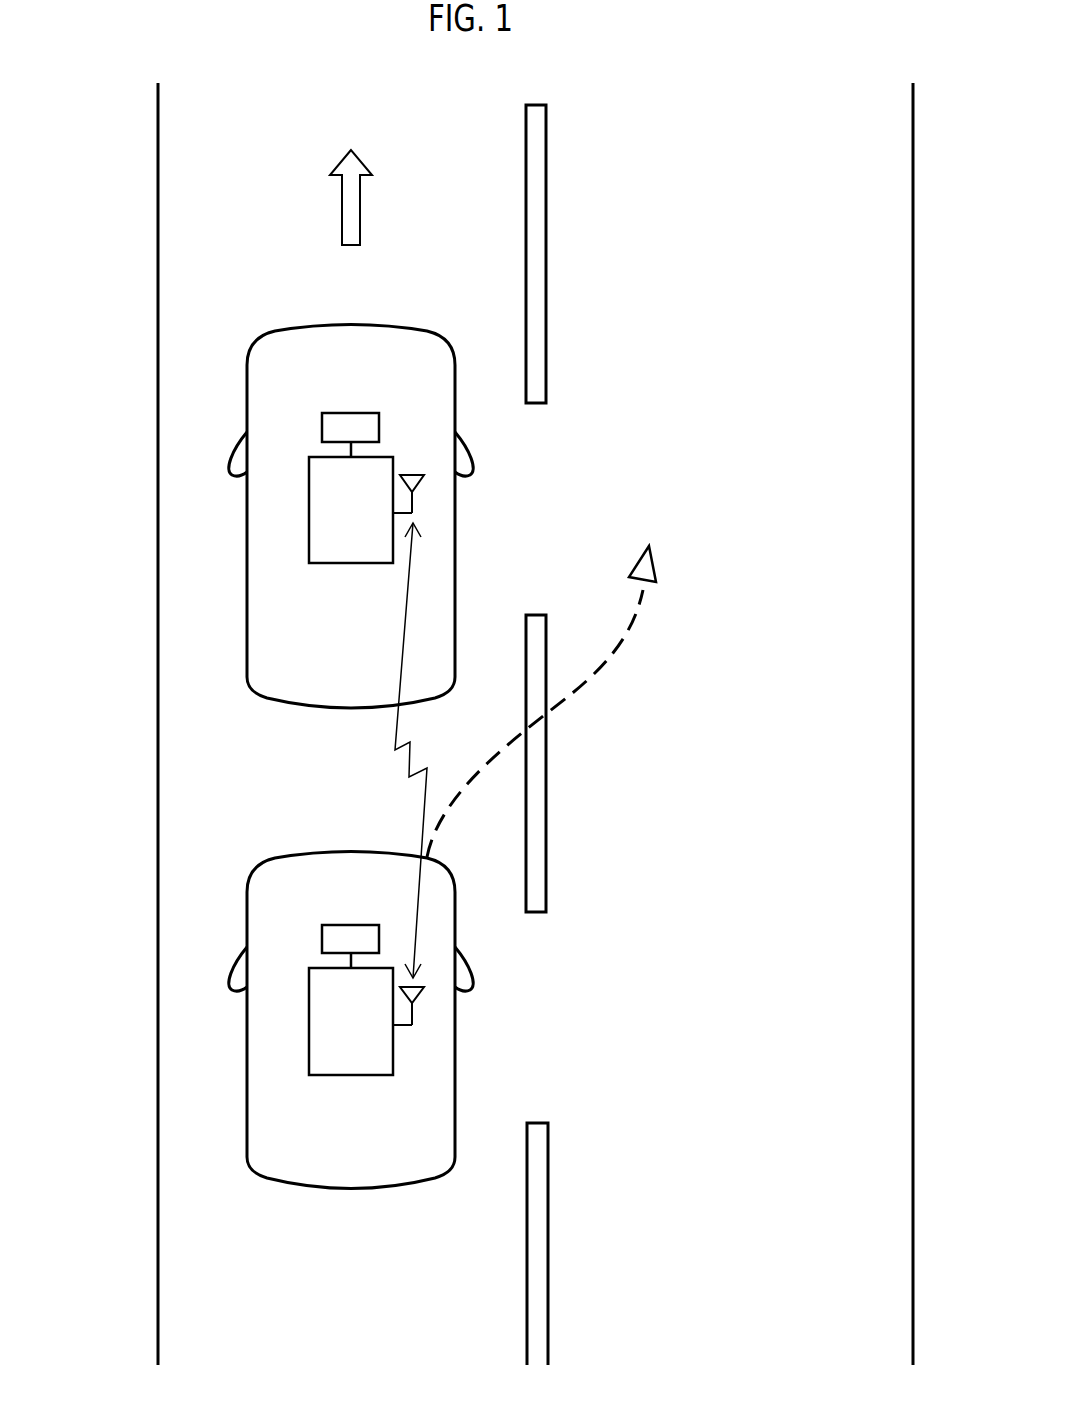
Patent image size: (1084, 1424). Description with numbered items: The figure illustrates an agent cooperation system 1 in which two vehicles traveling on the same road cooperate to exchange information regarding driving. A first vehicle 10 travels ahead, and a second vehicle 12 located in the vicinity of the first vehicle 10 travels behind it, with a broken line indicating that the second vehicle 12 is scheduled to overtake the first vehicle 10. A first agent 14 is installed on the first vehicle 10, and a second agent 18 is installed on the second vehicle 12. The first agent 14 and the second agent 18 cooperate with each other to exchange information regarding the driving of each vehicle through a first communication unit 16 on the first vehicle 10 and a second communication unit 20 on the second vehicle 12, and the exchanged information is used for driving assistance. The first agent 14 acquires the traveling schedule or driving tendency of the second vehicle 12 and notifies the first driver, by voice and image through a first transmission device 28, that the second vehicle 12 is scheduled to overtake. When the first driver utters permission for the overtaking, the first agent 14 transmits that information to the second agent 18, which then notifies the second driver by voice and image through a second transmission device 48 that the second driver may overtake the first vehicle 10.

The agent cooperation system 1 is at (320, 747).
The first vehicle 10 is at (247, 381).
The second vehicle 12 is at (247, 894).
The first agent 14 is at (309, 529).
The first communication unit 16 is at (413, 503).
The second agent 18 is at (309, 1049).
The second communication unit 20 is at (413, 1017).
The first transmission device 28 is at (322, 420).
The second transmission device 48 is at (322, 932).